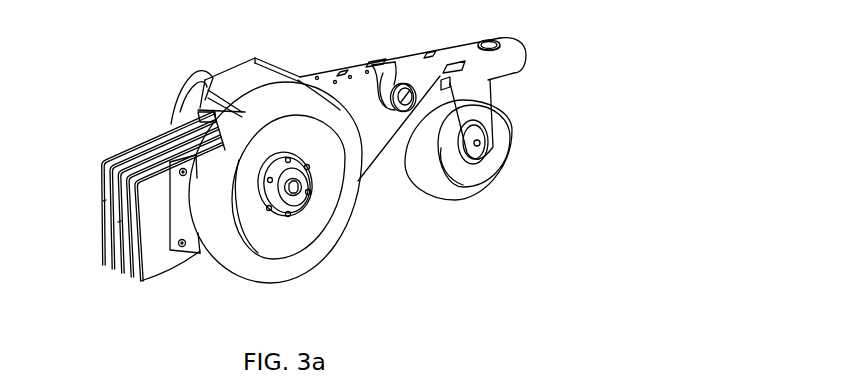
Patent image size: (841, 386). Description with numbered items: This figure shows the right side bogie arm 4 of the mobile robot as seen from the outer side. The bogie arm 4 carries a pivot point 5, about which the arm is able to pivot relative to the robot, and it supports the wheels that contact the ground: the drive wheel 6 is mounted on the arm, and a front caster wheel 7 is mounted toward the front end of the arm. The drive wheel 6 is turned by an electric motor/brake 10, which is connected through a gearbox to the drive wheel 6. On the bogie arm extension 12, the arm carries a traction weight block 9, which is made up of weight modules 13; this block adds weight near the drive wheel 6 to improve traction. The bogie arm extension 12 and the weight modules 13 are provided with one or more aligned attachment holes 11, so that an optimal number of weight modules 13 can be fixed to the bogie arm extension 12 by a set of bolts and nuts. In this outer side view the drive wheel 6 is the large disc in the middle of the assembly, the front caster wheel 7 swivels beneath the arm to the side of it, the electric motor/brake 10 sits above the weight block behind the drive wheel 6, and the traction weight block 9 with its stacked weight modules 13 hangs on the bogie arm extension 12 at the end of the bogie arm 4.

The bogie arm 4 is at (377, 142).
The pivot point of the bogie arm 5 is at (410, 83).
The drive wheel 6 is at (314, 212).
The front caster wheel 7 is at (465, 173).
The traction weight block 9 is at (157, 255).
The electric motor/brake 10 is at (178, 82).
The attachment holes 11 is at (181, 170).
The bogie arm extension 12 is at (188, 227).
The weight modules 13 is at (103, 201).